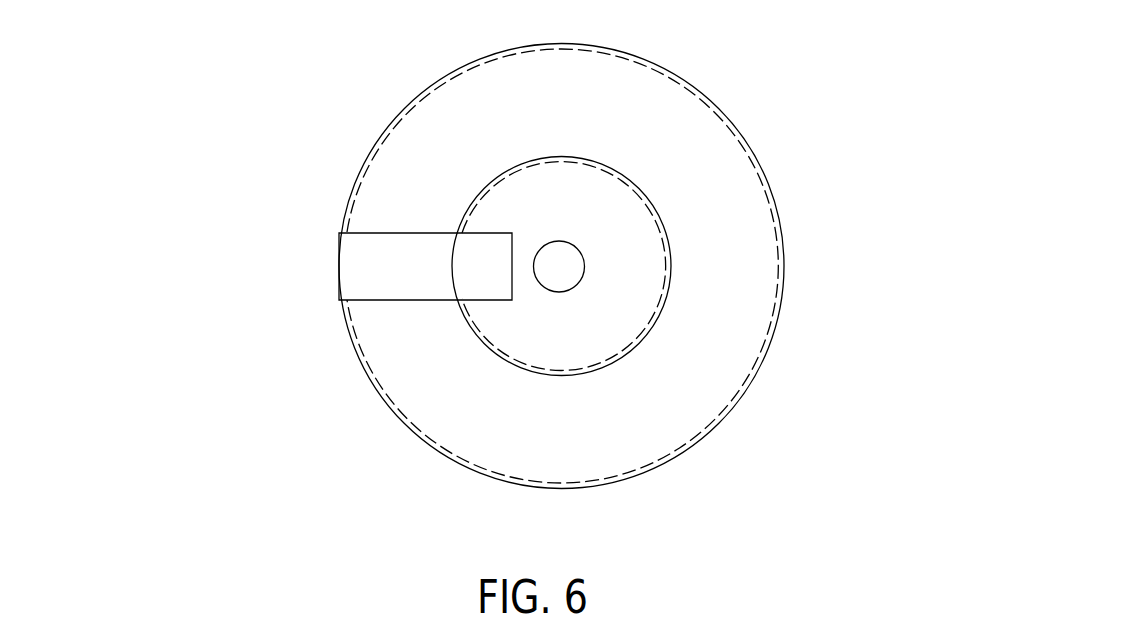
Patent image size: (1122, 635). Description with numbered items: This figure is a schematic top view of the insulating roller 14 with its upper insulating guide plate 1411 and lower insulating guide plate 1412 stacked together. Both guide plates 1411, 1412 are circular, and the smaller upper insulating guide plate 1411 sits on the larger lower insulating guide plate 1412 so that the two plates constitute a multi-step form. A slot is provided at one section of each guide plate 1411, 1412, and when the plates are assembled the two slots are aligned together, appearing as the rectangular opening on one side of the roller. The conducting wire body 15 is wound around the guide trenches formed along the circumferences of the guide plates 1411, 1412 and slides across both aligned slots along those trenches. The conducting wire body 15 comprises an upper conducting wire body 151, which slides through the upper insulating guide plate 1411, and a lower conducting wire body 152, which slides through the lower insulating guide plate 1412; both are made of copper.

The insulating roller 14 is at (842, 23).
The upper insulating guide plate 1411 is at (572, 195).
The lower insulating guide plate 1412 is at (735, 212).
The conducting wire body 15 is at (122, 63).
The upper conducting wire body 151 is at (452, 265).
The lower conducting wire body 152 is at (338, 267).